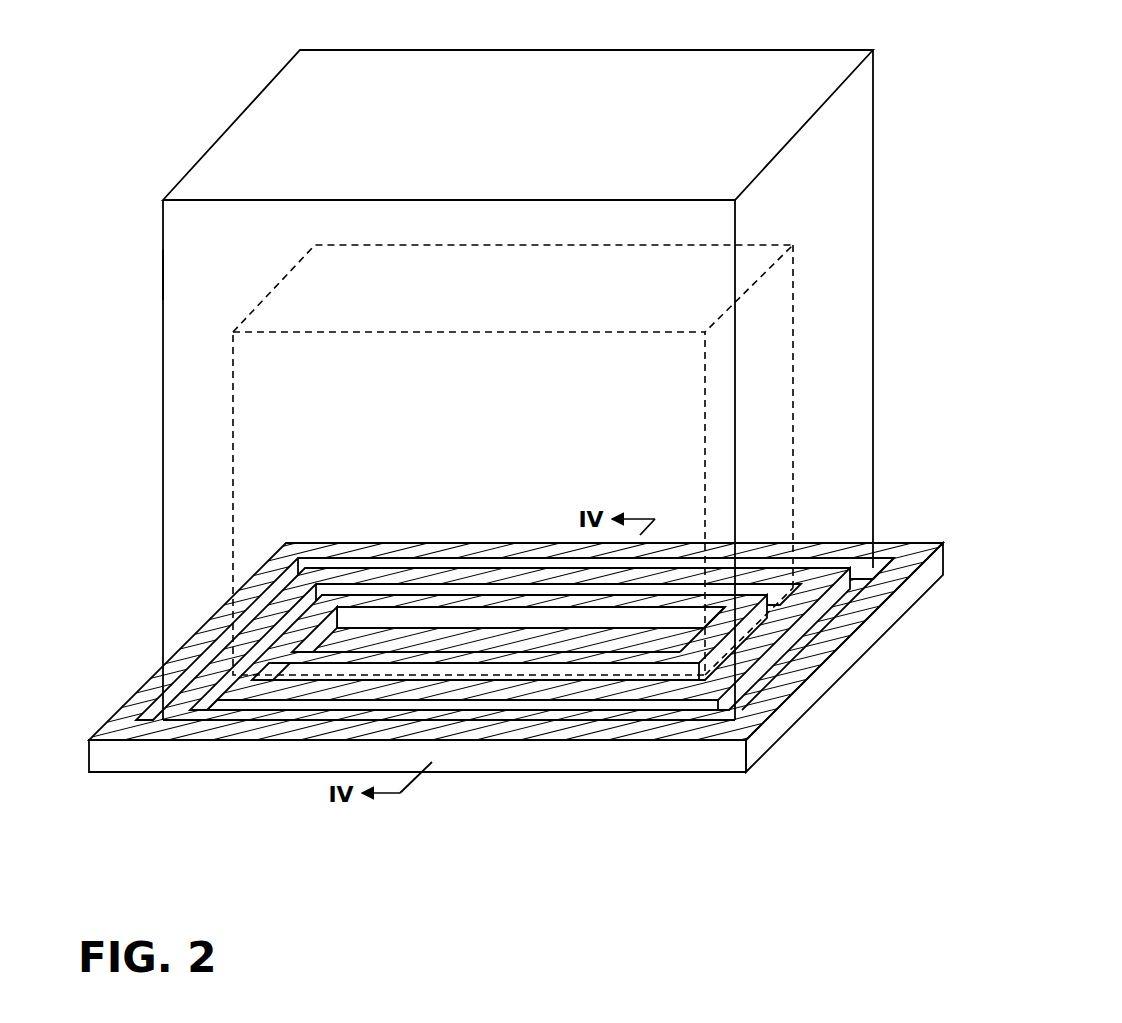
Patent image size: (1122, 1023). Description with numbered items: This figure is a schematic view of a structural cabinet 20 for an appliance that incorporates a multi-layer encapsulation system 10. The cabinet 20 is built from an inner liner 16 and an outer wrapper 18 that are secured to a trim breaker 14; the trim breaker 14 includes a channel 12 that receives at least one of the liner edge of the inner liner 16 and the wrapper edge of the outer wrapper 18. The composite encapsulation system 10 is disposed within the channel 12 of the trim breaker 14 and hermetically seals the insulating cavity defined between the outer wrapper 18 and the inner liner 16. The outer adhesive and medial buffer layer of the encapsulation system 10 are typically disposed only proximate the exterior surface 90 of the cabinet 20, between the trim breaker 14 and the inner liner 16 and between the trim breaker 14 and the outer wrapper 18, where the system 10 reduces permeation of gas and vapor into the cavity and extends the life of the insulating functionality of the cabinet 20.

The multi-layer encapsulation system 10 is at (128, 612).
The channel 12 is at (140, 707).
The trim breaker 14 is at (85, 772).
The inner liner 16 is at (780, 318).
The outer wrapper 18 is at (826, 178).
The structural cabinet 20 is at (189, 87).
The exterior surface 90 is at (220, 268).